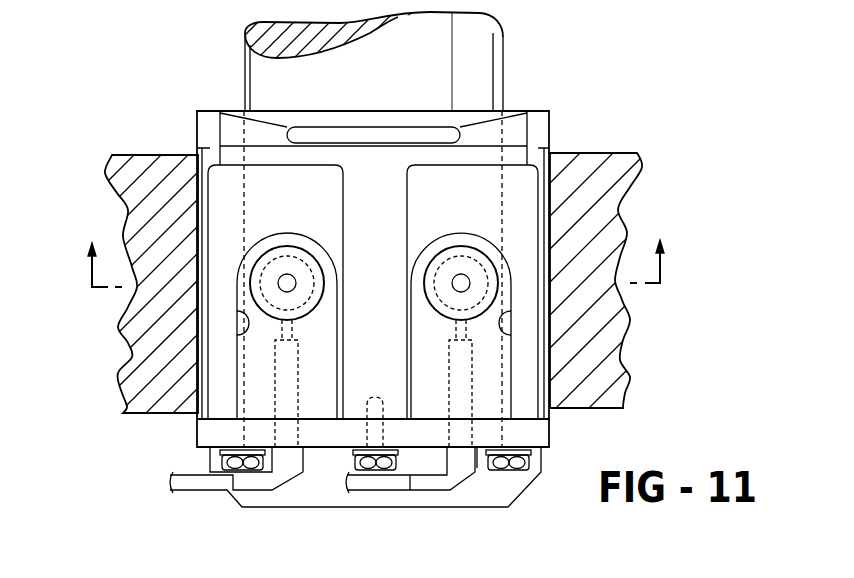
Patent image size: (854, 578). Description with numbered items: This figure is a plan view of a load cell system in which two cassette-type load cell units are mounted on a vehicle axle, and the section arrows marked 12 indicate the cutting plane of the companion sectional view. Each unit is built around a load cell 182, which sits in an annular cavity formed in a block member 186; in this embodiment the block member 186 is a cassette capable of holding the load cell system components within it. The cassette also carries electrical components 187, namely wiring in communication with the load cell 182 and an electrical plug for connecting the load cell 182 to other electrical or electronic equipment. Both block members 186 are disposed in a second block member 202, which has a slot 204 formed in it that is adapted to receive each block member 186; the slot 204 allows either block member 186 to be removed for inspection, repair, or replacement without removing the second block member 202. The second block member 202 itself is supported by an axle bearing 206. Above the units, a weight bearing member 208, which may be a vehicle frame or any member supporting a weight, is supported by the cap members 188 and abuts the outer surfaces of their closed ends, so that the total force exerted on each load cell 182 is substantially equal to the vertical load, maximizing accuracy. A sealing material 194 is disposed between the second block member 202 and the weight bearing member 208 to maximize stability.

The axle bearing 206 is at (245, 87).
The second block member 202 is at (372, 181).
The sealing material 194 is at (562, 160).
The weight bearing member 208 is at (135, 395).
The load cell 182 is at (270, 277).
The cap member 188 is at (287, 247).
The slot 204 is at (240, 330).
The block member 186 is at (260, 352).
The electrical components 187 is at (287, 457).
The section line for FIG. 12 is at (379, 259).